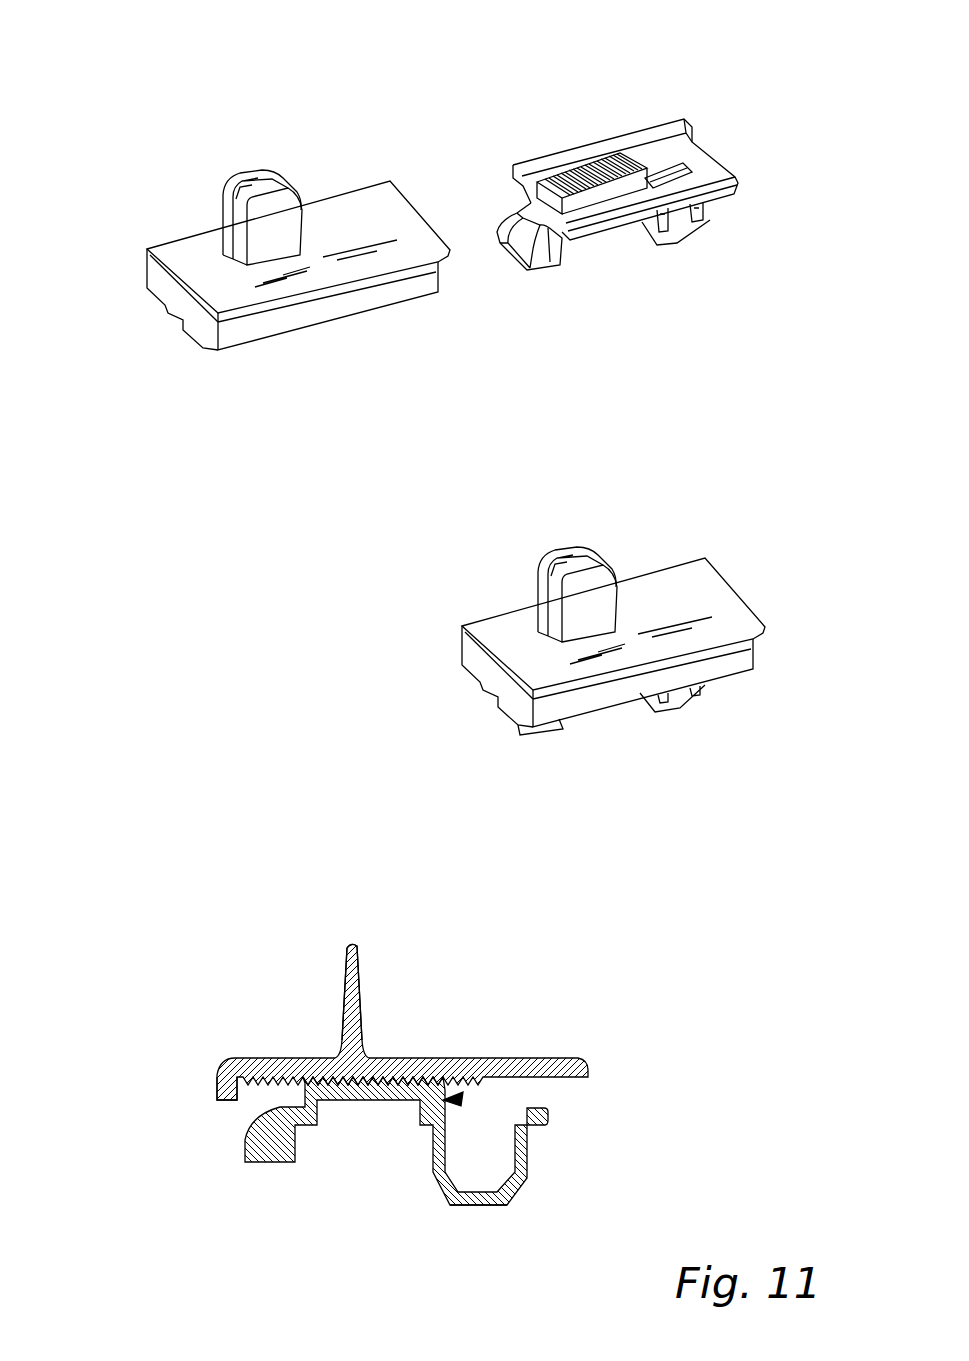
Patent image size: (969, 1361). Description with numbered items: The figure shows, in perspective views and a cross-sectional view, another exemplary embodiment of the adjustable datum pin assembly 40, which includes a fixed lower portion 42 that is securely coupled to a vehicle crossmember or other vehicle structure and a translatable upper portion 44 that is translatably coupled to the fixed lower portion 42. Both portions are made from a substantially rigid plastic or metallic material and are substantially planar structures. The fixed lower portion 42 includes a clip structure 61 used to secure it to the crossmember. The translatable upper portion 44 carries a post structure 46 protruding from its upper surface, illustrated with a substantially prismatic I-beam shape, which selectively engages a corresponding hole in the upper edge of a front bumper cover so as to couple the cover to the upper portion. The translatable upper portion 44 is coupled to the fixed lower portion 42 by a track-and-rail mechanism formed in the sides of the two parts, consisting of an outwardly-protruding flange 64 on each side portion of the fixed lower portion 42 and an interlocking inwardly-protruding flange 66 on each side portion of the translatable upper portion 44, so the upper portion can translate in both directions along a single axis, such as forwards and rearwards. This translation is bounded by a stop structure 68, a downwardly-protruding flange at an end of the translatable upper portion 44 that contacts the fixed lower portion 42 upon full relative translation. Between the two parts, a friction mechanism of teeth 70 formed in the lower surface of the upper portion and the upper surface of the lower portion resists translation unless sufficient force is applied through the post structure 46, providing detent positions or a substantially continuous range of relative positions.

The adjustable datum pin assembly 40 is at (475, 74).
The fixed lower portion 42 is at (700, 151).
The translatable upper portion 44 is at (168, 243).
The post structure 46 is at (246, 175).
The clip structure 61 is at (516, 1207).
The outwardly-protruding flange 64 is at (606, 140).
The inwardly-protruding flange 66 is at (278, 330).
The stop structure 68 is at (217, 1083).
The teeth 70 is at (460, 1100).